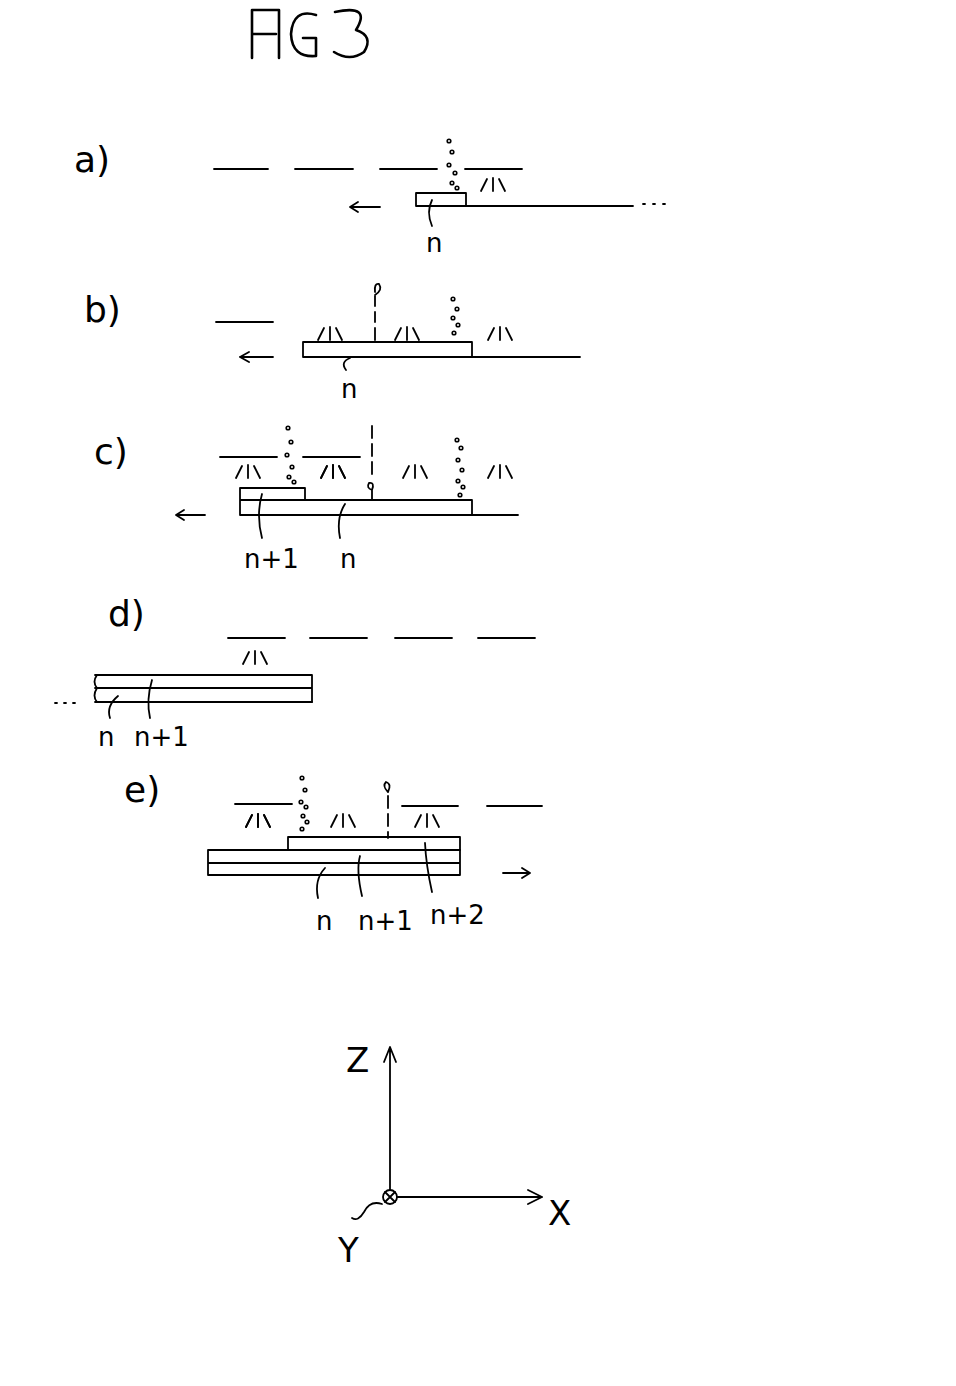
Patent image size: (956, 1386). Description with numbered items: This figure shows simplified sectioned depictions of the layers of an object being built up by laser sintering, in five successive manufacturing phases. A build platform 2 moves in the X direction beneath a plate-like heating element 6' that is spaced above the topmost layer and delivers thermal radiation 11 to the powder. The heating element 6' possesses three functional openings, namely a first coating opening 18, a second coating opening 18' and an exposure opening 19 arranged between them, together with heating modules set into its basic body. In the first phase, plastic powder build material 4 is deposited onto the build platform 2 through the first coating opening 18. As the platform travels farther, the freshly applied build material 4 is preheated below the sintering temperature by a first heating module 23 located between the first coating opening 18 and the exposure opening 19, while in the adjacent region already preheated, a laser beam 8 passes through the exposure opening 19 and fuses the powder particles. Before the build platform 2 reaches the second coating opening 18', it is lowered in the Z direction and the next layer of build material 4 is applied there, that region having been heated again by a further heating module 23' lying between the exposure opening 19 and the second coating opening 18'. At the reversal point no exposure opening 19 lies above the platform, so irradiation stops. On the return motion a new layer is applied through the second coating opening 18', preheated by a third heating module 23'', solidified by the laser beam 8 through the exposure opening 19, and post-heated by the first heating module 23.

The build platform 2 is at (555, 208).
The build material 4 is at (474, 142).
The heating element 6' is at (384, 456).
The laser beam 8 is at (374, 296).
The thermal radiation 11 is at (520, 190).
The first coating opening 18 is at (420, 487).
The second coating opening 18' is at (306, 489).
The exposure opening 19 is at (382, 156).
The first heating module 23 is at (378, 561).
The further heating module 23' is at (374, 430).
The third heating module 23'' is at (219, 843).